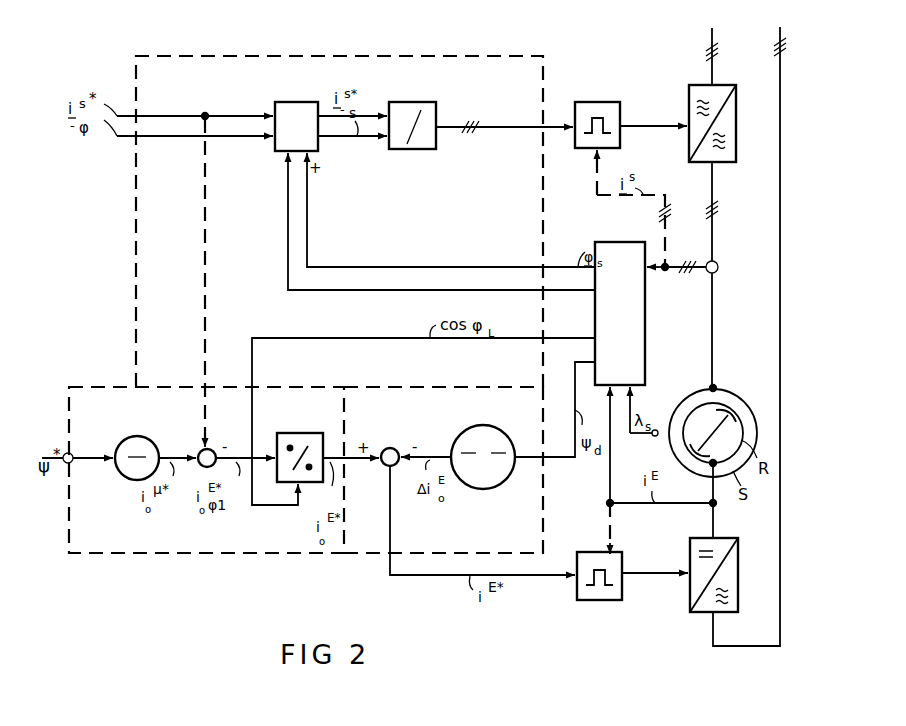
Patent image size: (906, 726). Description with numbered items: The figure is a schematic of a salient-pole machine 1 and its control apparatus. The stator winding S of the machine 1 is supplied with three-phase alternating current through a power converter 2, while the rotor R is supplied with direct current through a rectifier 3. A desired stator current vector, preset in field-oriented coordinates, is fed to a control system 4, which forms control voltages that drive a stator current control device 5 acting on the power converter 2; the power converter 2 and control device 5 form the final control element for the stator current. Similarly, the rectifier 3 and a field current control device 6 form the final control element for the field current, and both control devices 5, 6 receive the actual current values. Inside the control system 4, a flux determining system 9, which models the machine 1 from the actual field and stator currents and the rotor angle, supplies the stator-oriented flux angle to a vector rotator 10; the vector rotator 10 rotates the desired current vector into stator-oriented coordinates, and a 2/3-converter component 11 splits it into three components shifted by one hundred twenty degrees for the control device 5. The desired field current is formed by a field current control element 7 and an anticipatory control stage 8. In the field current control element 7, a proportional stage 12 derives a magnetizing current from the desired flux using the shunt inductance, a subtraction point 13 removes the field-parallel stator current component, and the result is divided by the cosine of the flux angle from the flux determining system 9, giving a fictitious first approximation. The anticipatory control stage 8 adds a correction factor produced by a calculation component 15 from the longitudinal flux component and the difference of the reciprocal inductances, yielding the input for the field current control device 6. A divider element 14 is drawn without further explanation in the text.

The salient-pole machine 1 is at (733, 386).
The power converter 2 is at (736, 114).
The rectifier 3 is at (738, 572).
The control system 4 is at (223, 56).
The stator current control device 5 is at (597, 102).
The field current control device 6 is at (597, 600).
The field current control element 7 is at (226, 576).
The anticipatory control stage 8 is at (370, 553).
The flux determining system 9 is at (645, 318).
The vector rotator 10 is at (293, 102).
The 2/3-converter component 11 is at (412, 102).
The proportional stage 12 is at (122, 440).
The subtraction point 13 is at (203, 447).
The divider 14 is at (297, 433).
The calculation component 15 is at (460, 437).